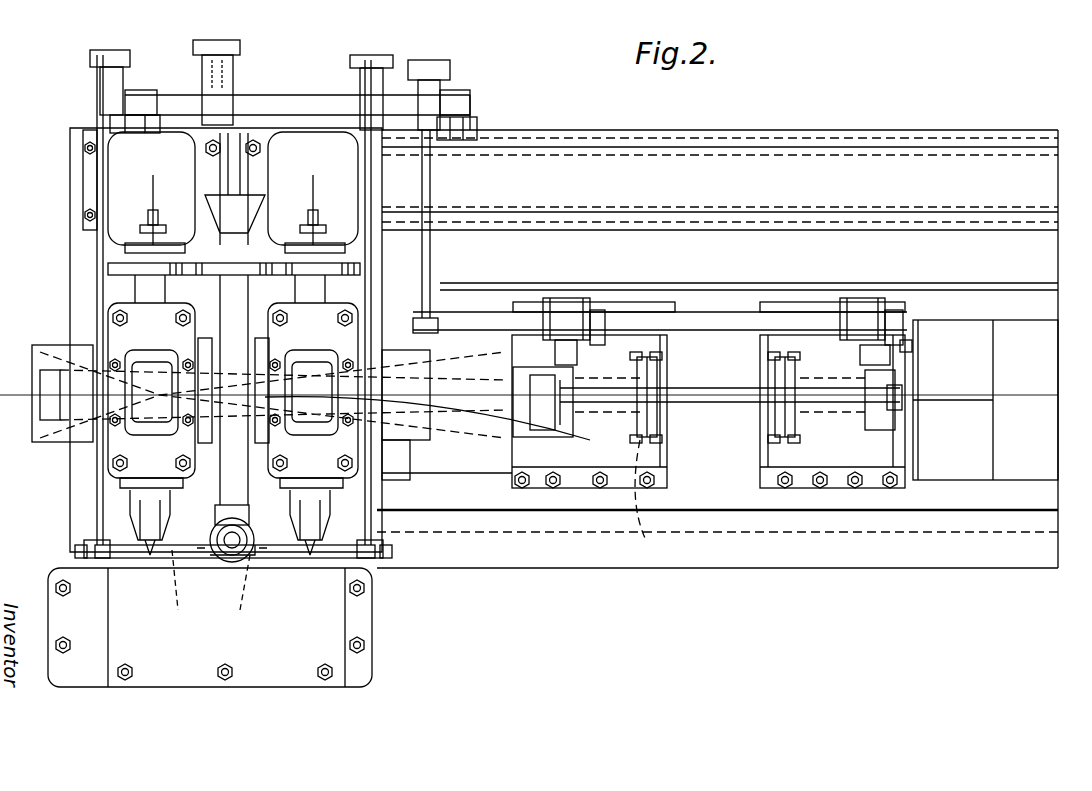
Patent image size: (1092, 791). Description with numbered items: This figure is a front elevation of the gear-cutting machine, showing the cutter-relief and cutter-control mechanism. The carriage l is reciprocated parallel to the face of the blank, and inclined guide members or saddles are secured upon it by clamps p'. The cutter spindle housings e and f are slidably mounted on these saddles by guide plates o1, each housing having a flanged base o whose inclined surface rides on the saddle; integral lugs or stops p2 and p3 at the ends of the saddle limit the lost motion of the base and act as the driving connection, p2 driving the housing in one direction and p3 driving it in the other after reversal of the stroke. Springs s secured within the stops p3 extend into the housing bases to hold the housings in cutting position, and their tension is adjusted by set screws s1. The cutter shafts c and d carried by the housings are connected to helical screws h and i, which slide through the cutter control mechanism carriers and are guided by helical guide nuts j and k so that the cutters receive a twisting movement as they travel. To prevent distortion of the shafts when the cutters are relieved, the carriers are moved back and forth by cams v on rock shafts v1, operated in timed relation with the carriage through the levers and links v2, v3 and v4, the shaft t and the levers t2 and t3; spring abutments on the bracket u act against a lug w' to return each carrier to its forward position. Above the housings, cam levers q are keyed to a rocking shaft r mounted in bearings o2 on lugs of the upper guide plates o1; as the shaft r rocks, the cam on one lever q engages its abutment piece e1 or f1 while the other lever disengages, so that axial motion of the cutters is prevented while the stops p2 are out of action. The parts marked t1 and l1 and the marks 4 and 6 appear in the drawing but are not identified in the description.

The lever t3 is at (222, 56).
The link v4 is at (118, 82).
The lever t2 is at (225, 85).
The shaft t is at (303, 105).
The bracket t1 is at (440, 90).
The vertical rod l1 is at (432, 182).
The lug w' is at (218, 381).
The helical screw h is at (233, 377).
The helical guide nut j is at (36, 425).
The helical screw i is at (470, 420).
The helical guide nut k is at (418, 470).
The cam v is at (150, 545).
The rock shaft v1 is at (211, 592).
The link v3 is at (95, 522).
The lever v2 is at (95, 565).
The section line 6 is at (12, 518).
The bracket u is at (210, 627).
The shaft r is at (462, 312).
The guide plate o1 is at (630, 304).
The bearing o2 is at (568, 300).
The cam lever q is at (552, 300).
The flanged base portion o is at (905, 352).
The abutment piece f1 is at (577, 358).
The cutter spindle housing f is at (589, 411).
The cutter shaft d is at (575, 420).
The cutter shaft c is at (730, 395).
The spring s is at (660, 358).
The set screw s1 is at (662, 362).
The abutment piece e1 is at (860, 357).
The cutter spindle housing e is at (832, 411).
The stop p3 is at (668, 478).
The stop p2 is at (512, 448).
The clamp p' is at (707, 524).
The carriage l is at (985, 400).
The section line 4 is at (1004, 397).